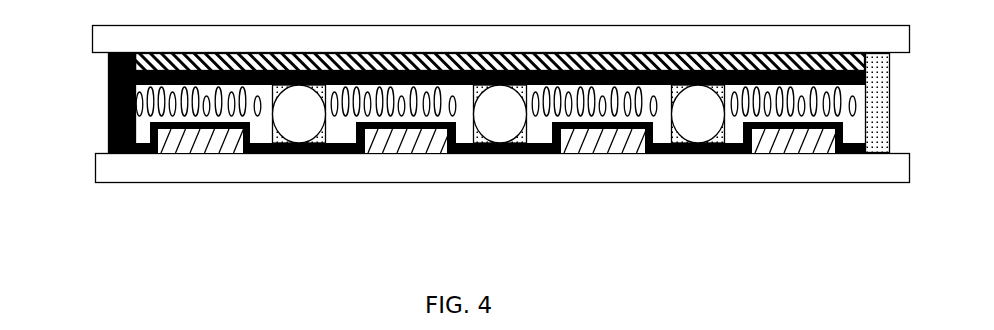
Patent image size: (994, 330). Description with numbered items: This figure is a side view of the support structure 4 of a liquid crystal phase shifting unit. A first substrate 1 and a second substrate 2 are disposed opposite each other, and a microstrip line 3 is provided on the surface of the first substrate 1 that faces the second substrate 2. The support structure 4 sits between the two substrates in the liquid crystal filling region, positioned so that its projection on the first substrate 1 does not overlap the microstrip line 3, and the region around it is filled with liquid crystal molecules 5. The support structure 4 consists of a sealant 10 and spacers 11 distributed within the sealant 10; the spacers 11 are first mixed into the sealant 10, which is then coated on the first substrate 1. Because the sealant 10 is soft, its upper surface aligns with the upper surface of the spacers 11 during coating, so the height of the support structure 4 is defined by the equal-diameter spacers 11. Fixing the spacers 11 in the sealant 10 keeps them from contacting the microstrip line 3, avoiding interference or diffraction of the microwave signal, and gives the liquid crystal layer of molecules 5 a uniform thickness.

The first substrate 1 is at (92, 47).
The second substrate 2 is at (95, 177).
The microstrip line 3 is at (193, 142).
The support structure 4 is at (494, 176).
The liquid crystal molecules 5 is at (137, 103).
The sealant 10 is at (320, 138).
The spacers 11 is at (280, 135).